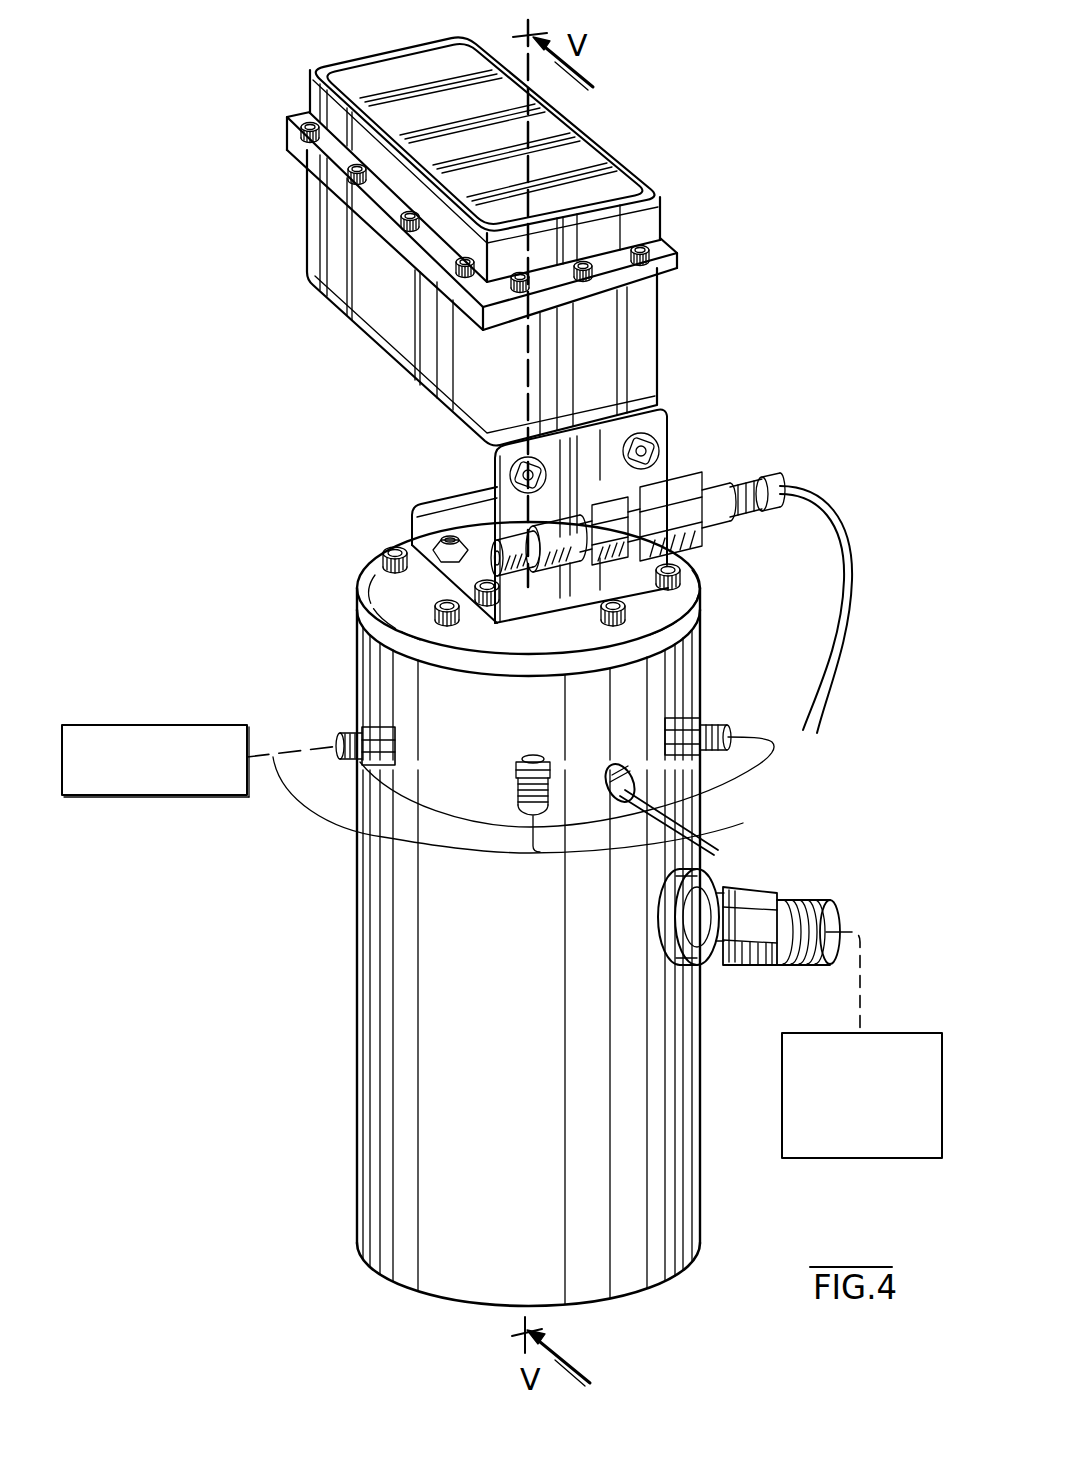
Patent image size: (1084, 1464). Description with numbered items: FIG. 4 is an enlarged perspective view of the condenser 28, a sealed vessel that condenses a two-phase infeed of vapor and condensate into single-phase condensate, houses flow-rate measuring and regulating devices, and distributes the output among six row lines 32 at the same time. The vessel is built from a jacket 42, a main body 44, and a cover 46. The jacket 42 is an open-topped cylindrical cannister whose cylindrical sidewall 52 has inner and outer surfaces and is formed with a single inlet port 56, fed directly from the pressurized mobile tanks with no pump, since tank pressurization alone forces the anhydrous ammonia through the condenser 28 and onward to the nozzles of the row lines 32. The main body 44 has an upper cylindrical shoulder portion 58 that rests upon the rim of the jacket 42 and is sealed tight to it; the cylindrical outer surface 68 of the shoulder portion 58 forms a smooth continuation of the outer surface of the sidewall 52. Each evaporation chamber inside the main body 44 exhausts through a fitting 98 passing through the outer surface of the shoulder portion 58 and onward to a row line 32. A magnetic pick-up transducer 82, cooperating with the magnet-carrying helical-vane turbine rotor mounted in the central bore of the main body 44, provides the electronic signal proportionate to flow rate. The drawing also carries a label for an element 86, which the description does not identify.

The condenser 28 is at (362, 408).
The controller housing 86 is at (373, 310).
The cover 46 is at (370, 576).
The main body 44 is at (368, 658).
The upper cylindrical shoulder portion 58 is at (366, 670).
The cylindrical outer surface 68 is at (366, 670).
The row lines 32 is at (208, 725).
The fitting 98 is at (355, 735).
The magnetic pick-up transducer 82 is at (743, 823).
The inlet port 56 is at (812, 900).
The jacket 42 is at (355, 943).
The cylindrical sidewall 52 is at (407, 962).